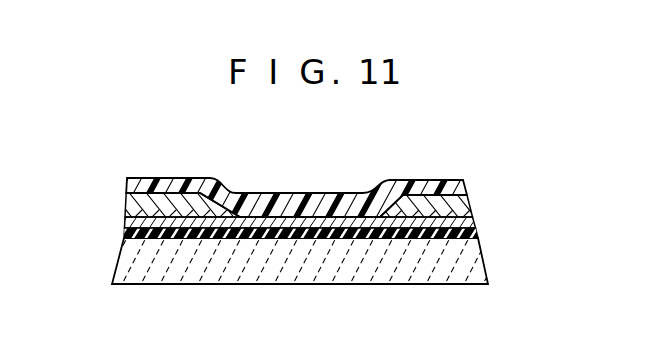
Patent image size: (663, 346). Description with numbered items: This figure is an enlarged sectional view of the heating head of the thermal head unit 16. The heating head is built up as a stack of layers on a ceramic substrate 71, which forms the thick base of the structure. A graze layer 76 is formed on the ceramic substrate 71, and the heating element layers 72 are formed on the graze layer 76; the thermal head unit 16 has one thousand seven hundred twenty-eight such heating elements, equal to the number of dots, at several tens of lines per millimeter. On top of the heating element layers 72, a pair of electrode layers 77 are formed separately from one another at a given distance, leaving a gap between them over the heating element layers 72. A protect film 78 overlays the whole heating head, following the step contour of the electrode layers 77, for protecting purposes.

The thermal head unit 16 is at (247, 284).
The ceramic substrate 71 is at (479, 261).
The heating element layer 72 is at (470, 220).
The graze layer 76 is at (477, 233).
The electrode layers 77 is at (125, 205).
The protect film 78 is at (216, 183).